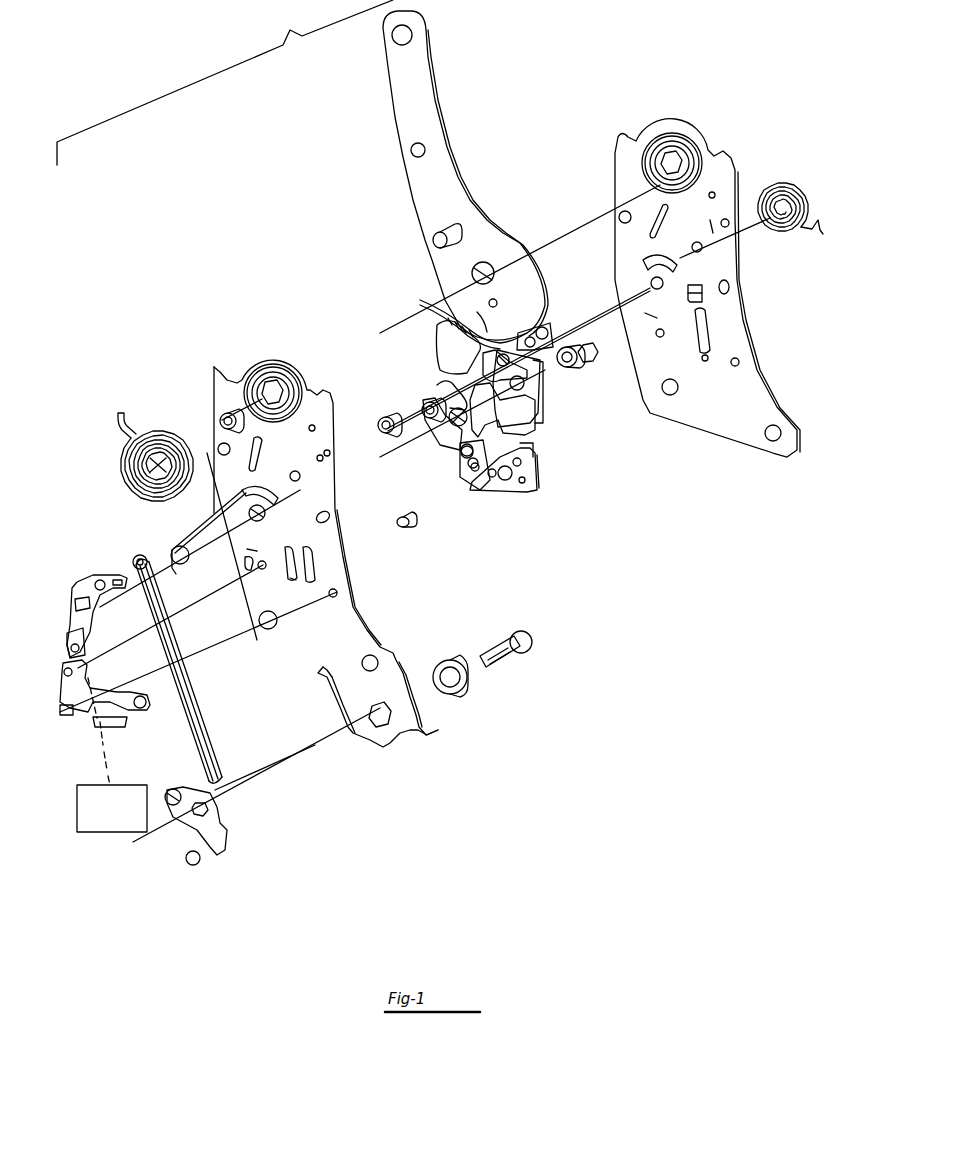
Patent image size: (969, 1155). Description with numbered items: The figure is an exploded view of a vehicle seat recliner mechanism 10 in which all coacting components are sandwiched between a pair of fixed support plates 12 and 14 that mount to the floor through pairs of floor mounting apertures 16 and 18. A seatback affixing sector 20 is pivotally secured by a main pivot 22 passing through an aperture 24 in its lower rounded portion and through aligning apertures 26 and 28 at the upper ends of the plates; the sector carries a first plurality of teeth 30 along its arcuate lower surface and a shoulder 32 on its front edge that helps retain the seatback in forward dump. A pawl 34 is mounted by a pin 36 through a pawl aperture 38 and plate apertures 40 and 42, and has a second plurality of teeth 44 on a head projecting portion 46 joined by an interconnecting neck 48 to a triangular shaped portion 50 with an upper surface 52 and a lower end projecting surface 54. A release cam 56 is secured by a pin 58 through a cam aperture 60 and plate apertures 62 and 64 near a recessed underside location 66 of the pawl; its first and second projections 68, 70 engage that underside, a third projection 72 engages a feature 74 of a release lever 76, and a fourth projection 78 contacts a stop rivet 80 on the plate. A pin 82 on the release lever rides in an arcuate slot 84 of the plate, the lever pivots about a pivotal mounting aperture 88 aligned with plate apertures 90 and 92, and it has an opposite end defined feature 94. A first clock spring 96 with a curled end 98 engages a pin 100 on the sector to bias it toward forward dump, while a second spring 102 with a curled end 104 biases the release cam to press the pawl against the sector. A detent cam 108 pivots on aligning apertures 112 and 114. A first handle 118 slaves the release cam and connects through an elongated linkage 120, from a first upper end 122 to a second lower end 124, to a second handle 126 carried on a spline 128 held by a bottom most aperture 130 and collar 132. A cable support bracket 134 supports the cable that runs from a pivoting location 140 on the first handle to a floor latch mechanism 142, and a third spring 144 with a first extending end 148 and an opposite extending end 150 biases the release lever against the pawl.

The recliner mechanism 10 is at (225, 82).
The support plate 12 is at (220, 375).
The support plate 14 is at (620, 145).
The floor mounting apertures 16 is at (258, 622).
The floor mounting apertures 18 is at (672, 395).
The seatback affixing sector 20 is at (405, 97).
The main pivot 22 is at (220, 418).
The aperture 24 is at (474, 273).
The aligning aperture 26 is at (265, 375).
The aligning aperture 28 is at (668, 168).
The first plurality of teeth 30 is at (430, 302).
The shoulder 32 is at (521, 240).
The pawl 34 is at (503, 332).
The pin 36 is at (388, 415).
The pawl aperture 38 is at (535, 370).
The support plate aperture 40 is at (292, 472).
The support plate aperture 42 is at (694, 245).
The second plurality of teeth 44 is at (447, 323).
The head projecting portion 46 is at (449, 343).
The interconnecting neck 48 is at (478, 318).
The triangular shaped portion 50 is at (540, 388).
The upper surface 52 is at (572, 346).
The lower end projecting surface 54 is at (545, 420).
The release cam 56 is at (455, 440).
The pin 58 is at (607, 350).
The cam aperture 60 is at (426, 408).
The support plate aperture 62 is at (253, 521).
The support plate aperture 64 is at (653, 279).
The recessed underside location 66 is at (460, 368).
The first projection 68 is at (490, 425).
The second projection 70 is at (447, 388).
The third projection 72 is at (503, 492).
The feature 74 is at (480, 487).
The release lever 76 is at (540, 485).
The fourth projection 78 is at (428, 440).
The stop rivet 80 is at (686, 293).
The pin 82 is at (405, 515).
The arcuate slot 84 is at (303, 572).
The pivotal mounting aperture 88 is at (466, 468).
The aligning aperture 90 is at (260, 570).
The aligning aperture 92 is at (660, 338).
The end defined feature 94 is at (535, 447).
The first clock spring 96 is at (146, 428).
The curled end 98 is at (118, 410).
The pin 100 is at (458, 232).
The second spring 102 is at (794, 200).
The curled end 104 is at (814, 216).
The detent cam 108 is at (548, 320).
The aligning aperture 112 is at (322, 462).
The aligning aperture 114 is at (722, 232).
The first handle 118 is at (78, 575).
The elongated linkage 120 is at (213, 700).
The first upper end 122 is at (135, 565).
The second lower end 124 is at (175, 790).
The second handle 126 is at (228, 830).
The spline 128 is at (515, 632).
The bottom most aperture 130 is at (374, 728).
The collar 132 is at (450, 660).
The cable support bracket 134 is at (118, 688).
The pivoting location 140 is at (65, 648).
The floor latch mechanism 142 is at (115, 833).
The third spring 144 is at (172, 548).
The first extending end 148 is at (214, 455).
The opposite extending end 150 is at (188, 563).